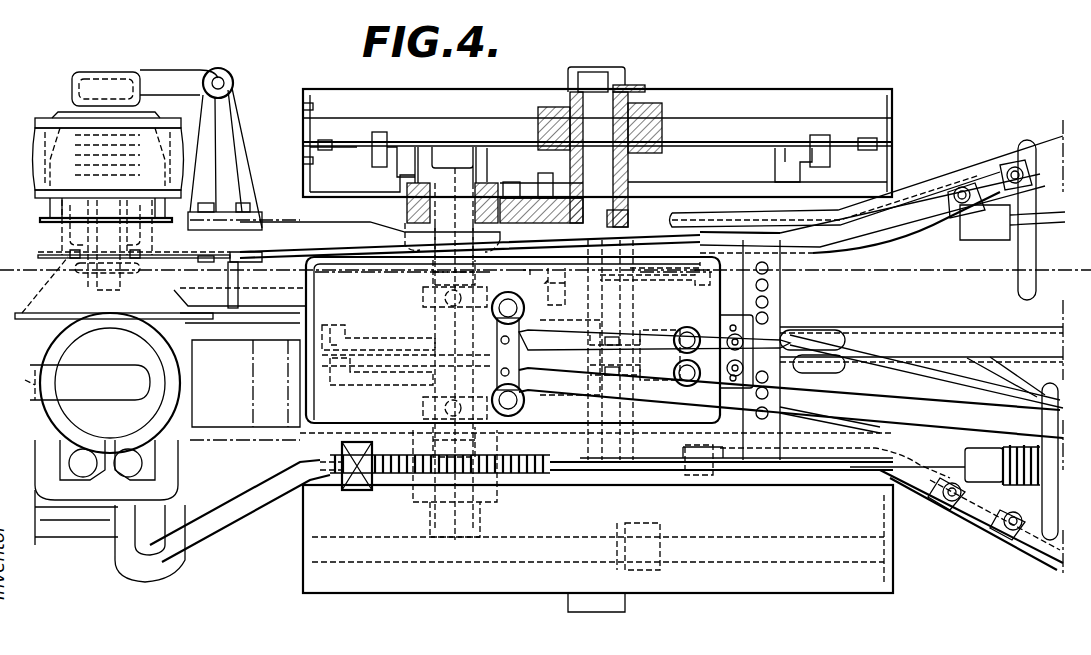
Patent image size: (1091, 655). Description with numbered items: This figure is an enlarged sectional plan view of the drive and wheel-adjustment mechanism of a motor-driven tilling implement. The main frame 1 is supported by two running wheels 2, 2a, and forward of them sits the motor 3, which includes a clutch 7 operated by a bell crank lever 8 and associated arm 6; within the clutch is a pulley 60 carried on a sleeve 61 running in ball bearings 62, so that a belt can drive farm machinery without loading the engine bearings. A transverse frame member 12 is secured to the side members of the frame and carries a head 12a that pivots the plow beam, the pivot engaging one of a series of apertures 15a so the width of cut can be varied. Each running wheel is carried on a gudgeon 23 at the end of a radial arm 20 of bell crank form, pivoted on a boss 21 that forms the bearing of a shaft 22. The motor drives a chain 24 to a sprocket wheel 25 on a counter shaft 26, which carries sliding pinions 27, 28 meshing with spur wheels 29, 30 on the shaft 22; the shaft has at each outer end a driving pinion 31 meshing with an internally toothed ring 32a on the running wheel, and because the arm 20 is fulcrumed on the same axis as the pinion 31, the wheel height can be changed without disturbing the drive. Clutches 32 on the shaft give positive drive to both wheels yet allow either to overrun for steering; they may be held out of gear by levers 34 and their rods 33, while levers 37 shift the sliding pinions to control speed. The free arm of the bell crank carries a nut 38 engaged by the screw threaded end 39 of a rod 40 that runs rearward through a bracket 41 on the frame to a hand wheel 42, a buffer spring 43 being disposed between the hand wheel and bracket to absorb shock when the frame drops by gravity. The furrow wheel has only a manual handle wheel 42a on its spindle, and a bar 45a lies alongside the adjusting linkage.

The main frame 1 is at (1050, 150).
The running wheel 2 is at (760, 100).
The running wheel 2a is at (760, 583).
The motor 3 is at (102, 429).
The arm 6 is at (172, 78).
The clutch 7 is at (70, 115).
The bell crank lever 8 is at (230, 173).
The transverse frame member 12 is at (800, 322).
The head 12a is at (792, 330).
The apertures 15a is at (768, 268).
The radial arm 20 is at (541, 176).
The boss 21 is at (405, 206).
The shaft 22 is at (455, 265).
The gudgeon 23 is at (596, 162).
The chain 24 is at (327, 268).
The sprocket wheel 25 is at (695, 280).
The counter shaft 26 is at (585, 287).
The sliding pinion 27 is at (640, 300).
The sliding pinion 28 is at (645, 405).
The spur wheel 29 is at (347, 333).
The spur wheel 30 is at (368, 378).
The driving pinion 31 is at (488, 148).
The clutches 32 is at (428, 297).
The internally toothed ring 32a is at (775, 163).
The link 33 is at (623, 340).
The levers 34 is at (512, 335).
The levers 37 is at (835, 338).
The nut 38 is at (355, 475).
The screw threaded end 39 is at (400, 472).
The rod 40 is at (650, 470).
The bracket 41 is at (968, 458).
The hand wheel 42 is at (1050, 492).
The handle wheel 42a is at (1032, 268).
The buffer spring 43 is at (1020, 470).
The bar 45a is at (890, 215).
The pulley 60 is at (108, 163).
The sleeve 61 is at (93, 212).
The ball bearings 62 is at (80, 203).